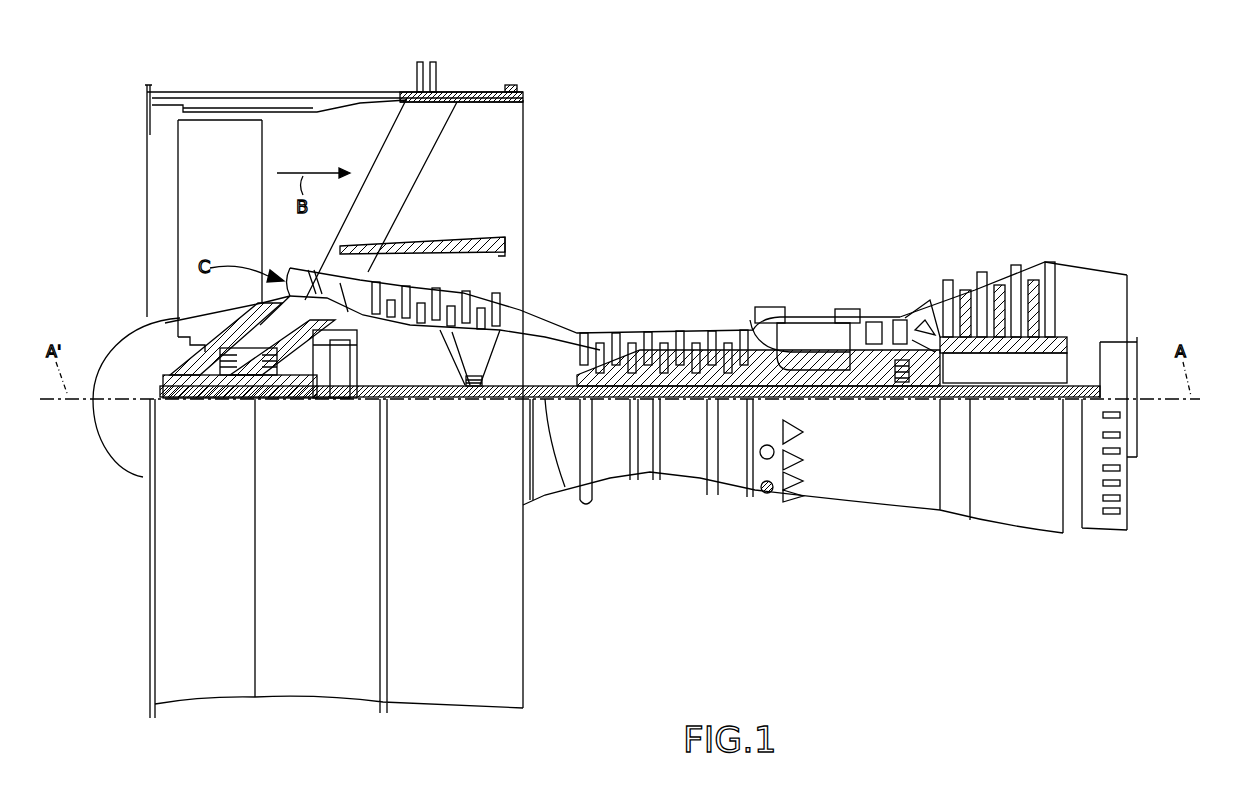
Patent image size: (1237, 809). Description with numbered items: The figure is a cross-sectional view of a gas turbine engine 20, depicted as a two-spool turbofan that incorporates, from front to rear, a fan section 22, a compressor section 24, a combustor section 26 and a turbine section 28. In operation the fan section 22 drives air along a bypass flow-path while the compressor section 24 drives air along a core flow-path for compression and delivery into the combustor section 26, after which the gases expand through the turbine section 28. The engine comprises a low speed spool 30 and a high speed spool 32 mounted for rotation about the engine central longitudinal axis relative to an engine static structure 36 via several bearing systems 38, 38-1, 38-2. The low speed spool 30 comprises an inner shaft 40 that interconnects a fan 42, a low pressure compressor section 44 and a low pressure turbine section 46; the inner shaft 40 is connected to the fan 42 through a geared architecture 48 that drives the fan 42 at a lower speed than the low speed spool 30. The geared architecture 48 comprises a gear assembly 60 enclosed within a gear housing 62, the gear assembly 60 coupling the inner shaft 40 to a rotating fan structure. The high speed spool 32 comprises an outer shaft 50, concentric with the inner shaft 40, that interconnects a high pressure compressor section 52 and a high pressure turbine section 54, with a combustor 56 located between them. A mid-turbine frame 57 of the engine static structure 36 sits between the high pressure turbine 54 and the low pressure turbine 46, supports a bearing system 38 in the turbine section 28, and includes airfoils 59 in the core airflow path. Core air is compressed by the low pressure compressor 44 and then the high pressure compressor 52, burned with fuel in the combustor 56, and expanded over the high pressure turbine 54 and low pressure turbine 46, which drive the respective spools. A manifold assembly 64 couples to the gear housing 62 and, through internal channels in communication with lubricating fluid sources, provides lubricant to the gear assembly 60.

The gas turbine engine 20 is at (858, 118).
The fan section 22 is at (377, 70).
The compressor section 24 is at (390, 200).
The combustor section 26 is at (857, 200).
The turbine section 28 is at (1067, 200).
The low speed spool 30 is at (692, 425).
The high speed spool 32 is at (722, 345).
The engine static structure 36 is at (728, 482).
The bearing system 38 is at (913, 399).
The bearing system 38-1 is at (228, 376).
The bearing system 38-2 is at (478, 388).
The inner shaft 40 is at (565, 483).
The fan 42 is at (229, 218).
The low pressure compressor section 44 is at (467, 290).
The low pressure turbine section 46 is at (962, 300).
The geared architecture 48 is at (347, 425).
The outer shaft 50 is at (806, 399).
The high pressure compressor section 52 is at (668, 325).
The high pressure turbine section 54 is at (875, 320).
The combustor 56 is at (803, 340).
The mid-turbine frame 57 is at (917, 327).
The airfoils 59 is at (920, 328).
The gear assembly 60 is at (347, 376).
The gear housing 62 is at (360, 349).
The manifold assembly 64 is at (313, 410).